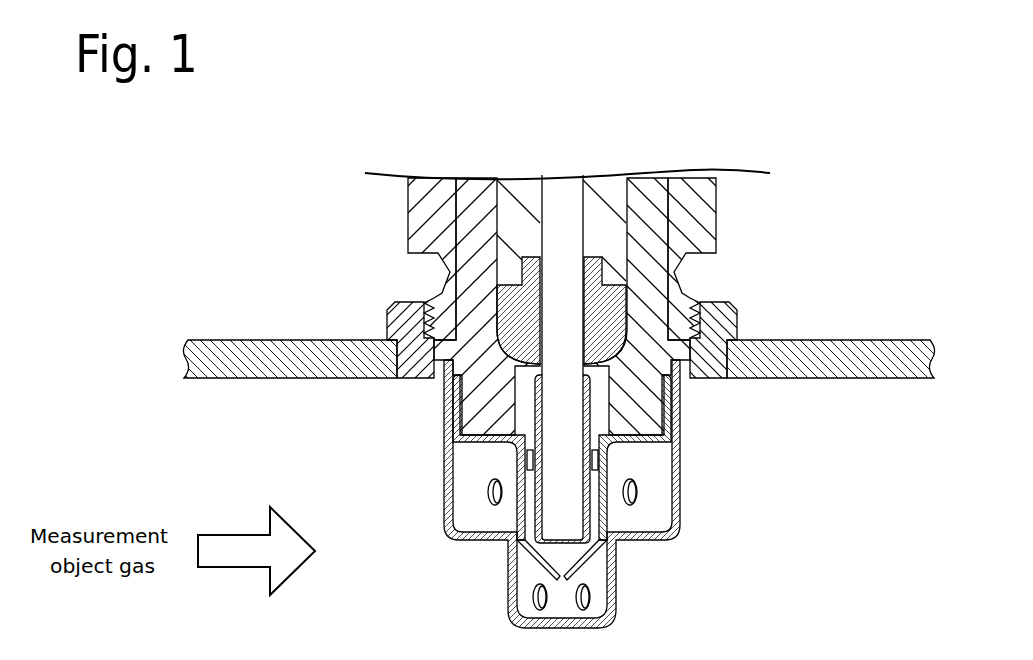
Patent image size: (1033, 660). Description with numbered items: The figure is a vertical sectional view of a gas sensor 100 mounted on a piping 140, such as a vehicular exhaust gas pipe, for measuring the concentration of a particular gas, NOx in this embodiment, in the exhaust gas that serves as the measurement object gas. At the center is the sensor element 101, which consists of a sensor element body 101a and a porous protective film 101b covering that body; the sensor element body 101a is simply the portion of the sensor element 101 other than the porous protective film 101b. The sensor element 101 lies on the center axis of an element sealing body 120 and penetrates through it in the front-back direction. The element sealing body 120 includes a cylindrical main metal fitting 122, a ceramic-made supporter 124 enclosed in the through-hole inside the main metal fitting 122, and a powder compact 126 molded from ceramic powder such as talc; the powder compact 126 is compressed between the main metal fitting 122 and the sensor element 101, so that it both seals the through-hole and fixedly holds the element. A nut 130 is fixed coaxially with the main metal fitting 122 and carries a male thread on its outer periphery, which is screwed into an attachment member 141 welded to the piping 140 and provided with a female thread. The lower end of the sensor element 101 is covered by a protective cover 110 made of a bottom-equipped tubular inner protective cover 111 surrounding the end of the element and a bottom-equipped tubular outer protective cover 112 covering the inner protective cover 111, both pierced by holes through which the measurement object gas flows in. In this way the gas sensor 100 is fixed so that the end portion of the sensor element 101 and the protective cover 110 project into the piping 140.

The gas sensor 100 is at (846, 140).
The sensor element 101 is at (444, 359).
The sensor element body 101a is at (558, 400).
The porous protective film 101b is at (525, 478).
The protective cover 110 is at (653, 494).
The inner protective cover 111 is at (612, 470).
The outer protective cover 112 is at (680, 493).
The element sealing body 120 is at (657, 306).
The main metal fitting 122 is at (645, 208).
The ceramic-made supporter 124 is at (612, 305).
The powder compact 126 is at (612, 253).
The nut 130 is at (423, 225).
The piping 140 is at (277, 360).
The attachment member 141 is at (403, 318).